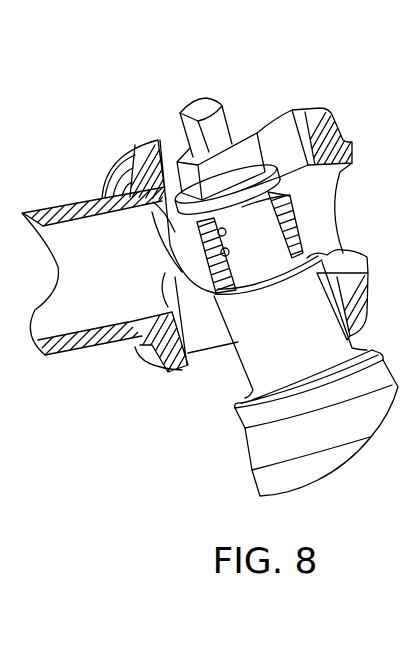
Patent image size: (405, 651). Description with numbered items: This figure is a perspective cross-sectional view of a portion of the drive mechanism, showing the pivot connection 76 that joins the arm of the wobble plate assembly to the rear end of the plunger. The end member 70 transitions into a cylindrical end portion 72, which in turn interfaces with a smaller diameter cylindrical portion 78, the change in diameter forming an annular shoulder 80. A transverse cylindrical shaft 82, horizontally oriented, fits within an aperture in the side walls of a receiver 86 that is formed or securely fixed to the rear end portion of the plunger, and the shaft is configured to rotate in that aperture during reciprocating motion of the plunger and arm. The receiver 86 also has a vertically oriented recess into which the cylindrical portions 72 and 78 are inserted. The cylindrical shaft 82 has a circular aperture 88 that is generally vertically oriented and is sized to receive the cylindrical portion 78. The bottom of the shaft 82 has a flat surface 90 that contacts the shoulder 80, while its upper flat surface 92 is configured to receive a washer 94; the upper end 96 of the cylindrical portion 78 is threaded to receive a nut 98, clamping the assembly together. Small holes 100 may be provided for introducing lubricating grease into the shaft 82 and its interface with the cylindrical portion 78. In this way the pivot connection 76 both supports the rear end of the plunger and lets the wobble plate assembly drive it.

The end member 70 is at (337, 467).
The cylindrical end portion 72 is at (270, 355).
The pivot connection 76 is at (303, 76).
The smaller diameter cylindrical portion 78 is at (267, 250).
The annular shoulder 80 is at (347, 252).
The transverse cylindrical shaft 82 is at (163, 298).
The receiver 86 is at (320, 132).
The circular aperture 88 is at (178, 243).
The flat surface 90 is at (255, 277).
The upper flat surface 92 is at (168, 231).
The washer 94 is at (272, 185).
The upper end 96 is at (212, 125).
The nut 98 is at (258, 149).
The small holes 100 is at (307, 207).